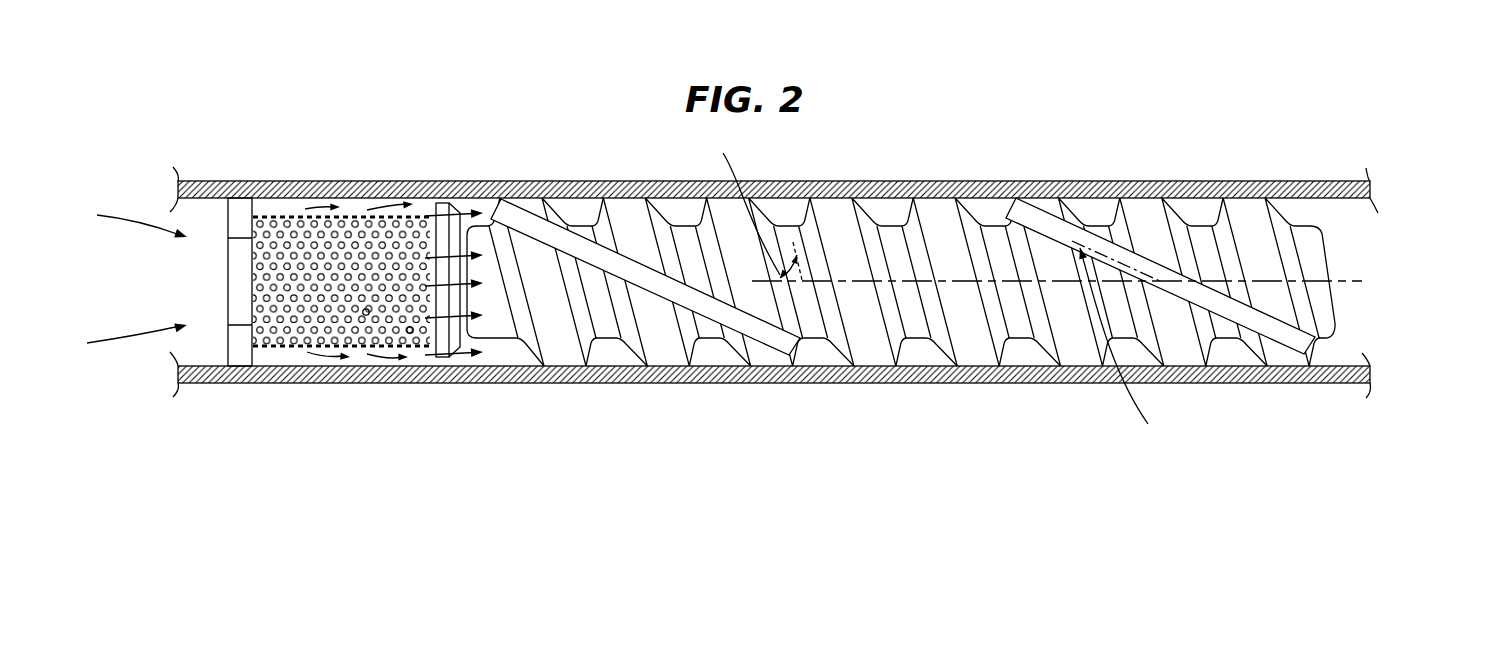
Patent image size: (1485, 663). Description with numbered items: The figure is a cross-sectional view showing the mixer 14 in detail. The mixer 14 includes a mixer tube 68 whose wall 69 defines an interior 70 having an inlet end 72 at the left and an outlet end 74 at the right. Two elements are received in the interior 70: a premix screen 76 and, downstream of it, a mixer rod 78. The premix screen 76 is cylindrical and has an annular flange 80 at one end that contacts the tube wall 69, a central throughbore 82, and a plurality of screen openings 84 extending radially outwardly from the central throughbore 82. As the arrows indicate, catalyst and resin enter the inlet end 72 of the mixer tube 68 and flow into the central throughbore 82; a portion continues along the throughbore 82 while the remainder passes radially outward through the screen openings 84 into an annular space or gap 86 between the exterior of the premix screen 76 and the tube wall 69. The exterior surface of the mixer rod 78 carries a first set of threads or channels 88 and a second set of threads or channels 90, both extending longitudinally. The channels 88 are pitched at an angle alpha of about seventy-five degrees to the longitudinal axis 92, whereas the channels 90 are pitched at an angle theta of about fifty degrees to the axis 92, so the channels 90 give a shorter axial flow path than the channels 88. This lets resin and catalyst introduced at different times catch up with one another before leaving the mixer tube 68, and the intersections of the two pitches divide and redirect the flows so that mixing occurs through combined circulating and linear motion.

The mixer 14 is at (1175, 105).
The mixer tube 68 is at (1030, 160).
The wall 69 is at (565, 198).
The interior 70 is at (992, 202).
The inlet end 72 is at (172, 220).
The outlet end 74 is at (1386, 304).
The premix screen 76 is at (291, 366).
The mixer rod 78 is at (876, 365).
The annular flange 80 is at (241, 357).
The central throughbore 82 is at (227, 277).
The screen openings 84 is at (410, 330).
The annular space or gap 86 is at (283, 205).
The first set of threads or channels 88 is at (613, 340).
The second set of threads or channels 90 is at (788, 345).
The longitudinal axis 92 is at (1348, 280).